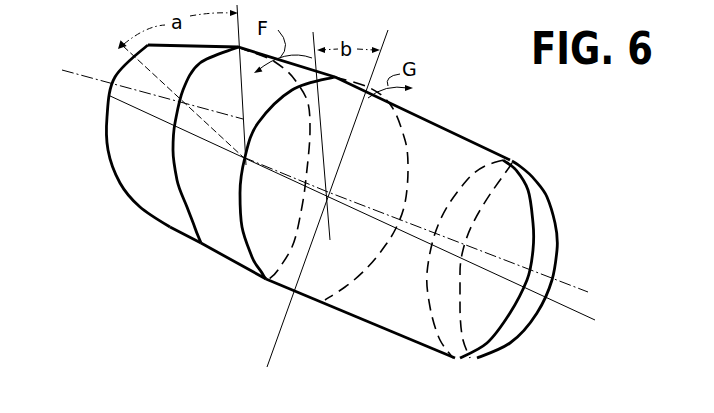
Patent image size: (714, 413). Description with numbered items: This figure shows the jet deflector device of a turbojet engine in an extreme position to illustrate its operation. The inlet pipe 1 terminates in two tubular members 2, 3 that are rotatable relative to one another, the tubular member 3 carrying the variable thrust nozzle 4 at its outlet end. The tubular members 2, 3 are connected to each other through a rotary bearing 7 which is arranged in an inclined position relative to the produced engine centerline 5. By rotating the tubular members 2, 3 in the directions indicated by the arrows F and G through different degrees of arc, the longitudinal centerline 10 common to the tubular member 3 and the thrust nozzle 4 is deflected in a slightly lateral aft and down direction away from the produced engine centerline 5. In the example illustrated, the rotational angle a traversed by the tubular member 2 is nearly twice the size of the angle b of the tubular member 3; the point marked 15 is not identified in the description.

The inlet pipe 1 is at (157, 203).
The tubular member 2 is at (215, 244).
The tubular member 3 is at (366, 312).
The variable thrust nozzle 4 is at (509, 327).
The produced engine centerline 5 is at (66, 72).
The rotary bearing 7 is at (253, 287).
The longitudinal centerline 10 is at (581, 292).
The intersection point 15 is at (331, 198).